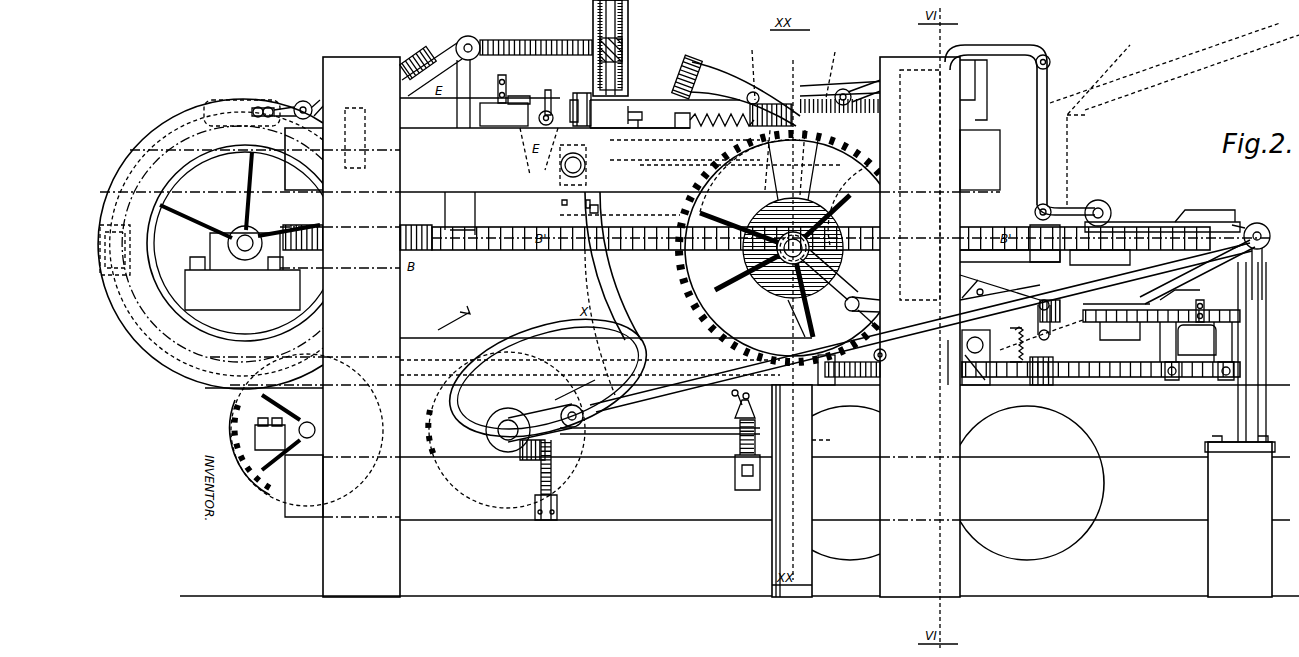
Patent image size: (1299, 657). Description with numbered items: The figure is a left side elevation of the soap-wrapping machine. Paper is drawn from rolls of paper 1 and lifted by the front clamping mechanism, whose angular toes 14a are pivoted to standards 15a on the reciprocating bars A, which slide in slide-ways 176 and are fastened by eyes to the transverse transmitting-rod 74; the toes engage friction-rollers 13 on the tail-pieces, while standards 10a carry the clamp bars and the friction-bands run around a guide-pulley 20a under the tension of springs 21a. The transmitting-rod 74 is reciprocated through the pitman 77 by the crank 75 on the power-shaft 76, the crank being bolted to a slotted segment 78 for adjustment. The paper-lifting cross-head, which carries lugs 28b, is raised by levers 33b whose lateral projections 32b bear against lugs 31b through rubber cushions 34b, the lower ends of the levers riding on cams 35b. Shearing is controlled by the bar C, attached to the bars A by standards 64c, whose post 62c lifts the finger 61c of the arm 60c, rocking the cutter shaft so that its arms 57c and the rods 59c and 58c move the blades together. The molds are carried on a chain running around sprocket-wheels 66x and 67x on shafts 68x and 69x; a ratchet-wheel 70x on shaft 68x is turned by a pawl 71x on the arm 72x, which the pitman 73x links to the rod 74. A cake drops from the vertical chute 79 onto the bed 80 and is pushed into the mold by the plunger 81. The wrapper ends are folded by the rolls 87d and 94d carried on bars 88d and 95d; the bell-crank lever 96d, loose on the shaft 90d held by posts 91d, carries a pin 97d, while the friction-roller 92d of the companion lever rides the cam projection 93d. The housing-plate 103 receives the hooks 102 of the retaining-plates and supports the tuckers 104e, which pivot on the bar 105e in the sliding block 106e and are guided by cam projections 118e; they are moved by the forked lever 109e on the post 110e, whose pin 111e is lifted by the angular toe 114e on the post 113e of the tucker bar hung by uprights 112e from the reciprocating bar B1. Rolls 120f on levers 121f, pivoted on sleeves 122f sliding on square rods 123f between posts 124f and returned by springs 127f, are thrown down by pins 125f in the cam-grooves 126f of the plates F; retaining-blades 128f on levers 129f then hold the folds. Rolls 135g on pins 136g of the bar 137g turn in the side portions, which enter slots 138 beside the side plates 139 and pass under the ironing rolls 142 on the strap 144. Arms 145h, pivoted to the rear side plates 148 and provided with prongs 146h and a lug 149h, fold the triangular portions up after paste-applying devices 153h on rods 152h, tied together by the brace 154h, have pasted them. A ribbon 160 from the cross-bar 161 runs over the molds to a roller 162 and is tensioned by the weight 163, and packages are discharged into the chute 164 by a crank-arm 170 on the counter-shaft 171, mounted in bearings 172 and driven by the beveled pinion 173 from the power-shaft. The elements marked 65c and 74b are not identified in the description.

The ring guard 160 is at (150, 165).
The wheel 67x is at (250, 180).
The hub bearing 69x is at (240, 228).
The bracket 148 is at (250, 100).
The link 145h is at (270, 106).
The pivot 161 is at (294, 102).
The arm 152h is at (320, 98).
The lever 154h is at (346, 72).
The rod 111e is at (361, 80).
The slide 149h is at (346, 138).
The rack 146h is at (417, 198).
The roller 153h is at (417, 55).
The rack 109e is at (536, 40).
The lever 110e is at (478, 32).
The cylinder 118e is at (598, 18).
The rod 104e is at (628, 30).
The piston 105e is at (628, 48).
The rod 106e is at (628, 63).
The block 139 is at (504, 114).
The link 114e is at (497, 76).
The bar 113e is at (524, 90).
The pin 144 is at (547, 88).
The roller 142 is at (557, 113).
The guide 137g is at (580, 92).
The slide 136g is at (575, 99).
The bar and spring 103 is at (640, 99).
The link 138 is at (527, 151).
The pivot 135g is at (587, 161).
The bar 128f is at (685, 150).
The rod 124f is at (740, 150).
The lever 102 is at (733, 88).
The pad 120f is at (700, 77).
The rack 121f is at (768, 102).
The rod 94d is at (751, 68).
The rod 95d is at (831, 67).
The pivot 87d is at (845, 88).
The link 88d is at (890, 75).
The arm 33b is at (602, 293).
The pin 31b is at (605, 205).
The pin 34b is at (593, 213).
The pin 32b is at (566, 203).
The rod 129f is at (618, 213).
The bracket 112e is at (464, 213).
The gear 66x is at (712, 310).
The hub 68x is at (793, 248).
The spoke 70x is at (783, 305).
The crank 71x is at (833, 280).
The link 72x is at (846, 306).
The link 73x is at (857, 320).
The cam 123f is at (750, 176).
The rod 127f is at (780, 160).
The rod 122f is at (812, 162).
The cam 125f is at (870, 150).
The bracket 126f is at (909, 119).
The slide 28b is at (915, 185).
The rack bar B1 is at (851, 238).
The roller 1 is at (938, 483).
The rod 164 is at (831, 447).
The frame F is at (980, 150).
The pipe 96d is at (1050, 73).
The pivot 90d is at (1035, 207).
The block 91d is at (1032, 234).
The roller 92d is at (1108, 206).
The table 97d is at (1140, 222).
The plate 93d is at (1228, 220).
The guide 79 is at (1068, 145).
The bar 80 is at (1010, 257).
The block 81 is at (1100, 257).
The wheel 74 is at (1251, 252).
The lever 77 is at (712, 390).
The rod 65c is at (1200, 305).
The cam loop 35b is at (525, 330).
The gear 74b is at (506, 430).
The crank 75 is at (529, 428).
The link 78 is at (540, 395).
The rack 76 is at (508, 452).
The post 173 is at (538, 480).
The rod 171 is at (668, 440).
The bracket 172 is at (738, 440).
The weight 170 is at (757, 430).
The pin 162 is at (732, 395).
The link 163 is at (735, 416).
The rack bar A is at (1032, 379).
The frame C is at (1161, 345).
The block 64c is at (1197, 340).
The link 62c is at (1212, 309).
The bar 61c is at (1110, 318).
The link 60c is at (1060, 300).
The pad 57c is at (1050, 325).
The rod 59c is at (1042, 338).
The brace 58c is at (1000, 287).
The spring 20a is at (1030, 343).
The spring seat 21a is at (1027, 345).
The bracket 14a is at (987, 357).
The link 10a is at (978, 365).
The bar 15a is at (949, 362).
The pin 13 is at (872, 353).
The block 176 is at (833, 383).